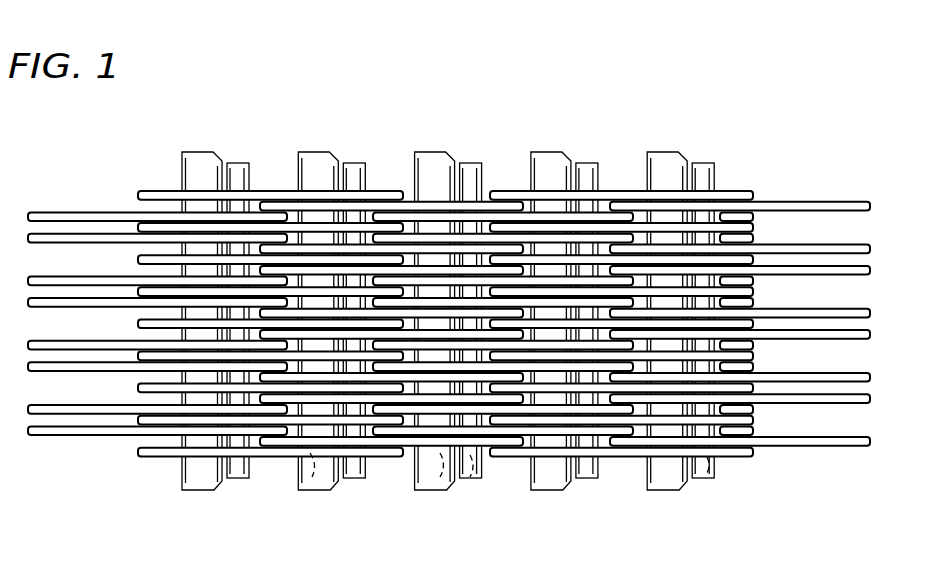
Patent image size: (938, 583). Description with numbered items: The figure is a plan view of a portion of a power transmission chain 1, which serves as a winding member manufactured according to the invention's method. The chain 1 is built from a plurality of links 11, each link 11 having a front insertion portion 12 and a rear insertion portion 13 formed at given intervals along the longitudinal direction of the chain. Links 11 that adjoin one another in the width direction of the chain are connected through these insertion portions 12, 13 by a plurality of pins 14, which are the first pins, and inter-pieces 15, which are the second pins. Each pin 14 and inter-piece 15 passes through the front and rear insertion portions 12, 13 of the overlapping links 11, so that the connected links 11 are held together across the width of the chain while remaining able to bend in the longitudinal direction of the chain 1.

The power transmission chain 1 is at (449, 329).
The link 11 is at (157, 453).
The front insertion portion 12 is at (468, 477).
The rear insertion portion 13 is at (312, 477).
The pin 14 is at (198, 477).
The inter-piece 15 is at (240, 470).